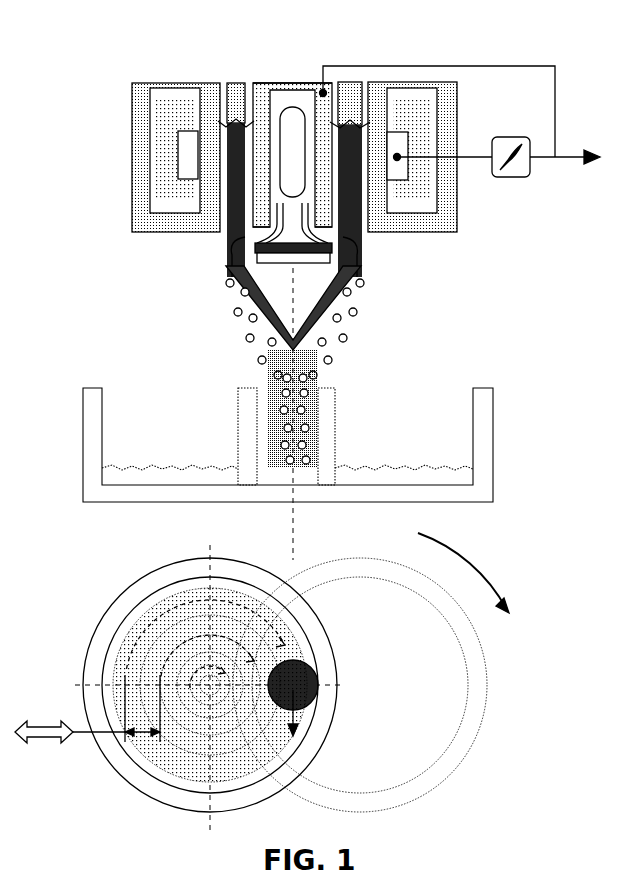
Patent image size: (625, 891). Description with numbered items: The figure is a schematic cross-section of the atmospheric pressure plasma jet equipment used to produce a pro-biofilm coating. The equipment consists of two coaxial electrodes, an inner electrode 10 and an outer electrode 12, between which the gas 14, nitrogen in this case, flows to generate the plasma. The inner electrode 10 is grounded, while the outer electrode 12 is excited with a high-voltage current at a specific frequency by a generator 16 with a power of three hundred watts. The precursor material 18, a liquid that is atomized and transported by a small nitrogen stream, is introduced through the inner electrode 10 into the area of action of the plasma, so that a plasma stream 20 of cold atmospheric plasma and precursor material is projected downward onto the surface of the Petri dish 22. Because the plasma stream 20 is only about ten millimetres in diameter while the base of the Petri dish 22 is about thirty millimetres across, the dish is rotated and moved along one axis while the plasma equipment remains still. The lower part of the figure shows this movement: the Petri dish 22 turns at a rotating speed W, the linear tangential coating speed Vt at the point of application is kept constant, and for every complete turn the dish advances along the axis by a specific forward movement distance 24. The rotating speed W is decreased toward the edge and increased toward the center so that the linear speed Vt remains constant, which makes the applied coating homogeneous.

The inner electrode 10 is at (263, 103).
The outer electrode 12 is at (192, 155).
The gas 14 is at (237, 203).
The generator 16 is at (460, 138).
The precursor material 18 is at (313, 99).
The plasma stream 20 is at (253, 349).
The Petri dish 22 is at (327, 455).
The forward movement distance 24 is at (87, 709).
The linear (tangential) coating speed Vt is at (288, 728).
The rotating speed W is at (463, 573).